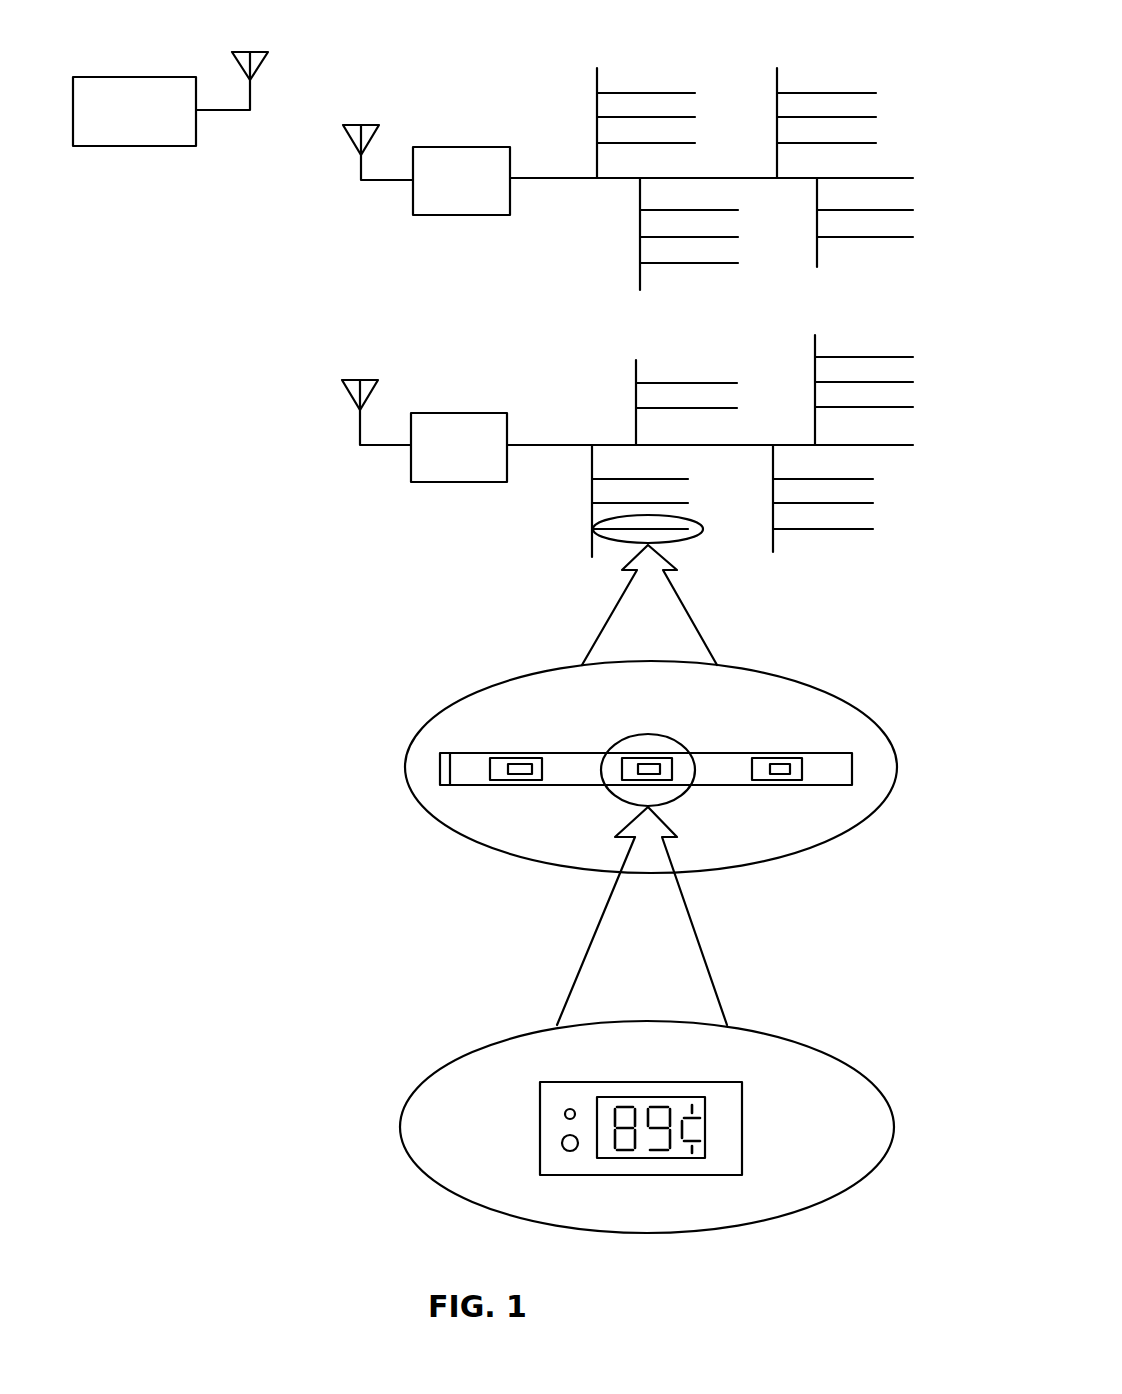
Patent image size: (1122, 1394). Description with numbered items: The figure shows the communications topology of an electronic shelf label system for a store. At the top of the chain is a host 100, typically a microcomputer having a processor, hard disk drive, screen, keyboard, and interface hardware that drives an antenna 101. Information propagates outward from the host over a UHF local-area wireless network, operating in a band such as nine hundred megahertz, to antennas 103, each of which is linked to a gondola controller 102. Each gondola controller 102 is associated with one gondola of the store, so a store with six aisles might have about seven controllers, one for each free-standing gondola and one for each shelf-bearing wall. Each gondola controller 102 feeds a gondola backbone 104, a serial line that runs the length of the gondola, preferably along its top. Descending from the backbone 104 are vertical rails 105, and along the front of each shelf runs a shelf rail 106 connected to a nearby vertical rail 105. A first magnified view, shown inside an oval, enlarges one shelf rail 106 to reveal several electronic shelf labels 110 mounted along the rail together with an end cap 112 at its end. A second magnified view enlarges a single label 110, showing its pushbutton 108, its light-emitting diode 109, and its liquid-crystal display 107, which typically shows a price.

The host 100 is at (133, 147).
The antenna 101 is at (268, 60).
The gondola controller 102 is at (465, 147).
The antenna 103 is at (343, 131).
The gondola backbone 104 is at (754, 445).
The vertical rail 105 is at (540, 504).
The shelf rail 106 is at (832, 92).
The liquid-crystal display 107 is at (643, 1160).
The pushbutton 108 is at (560, 1145).
The light-emitting diode 109 is at (563, 1112).
The electronic shelf label 110 is at (788, 1108).
The end cap 112 is at (443, 786).